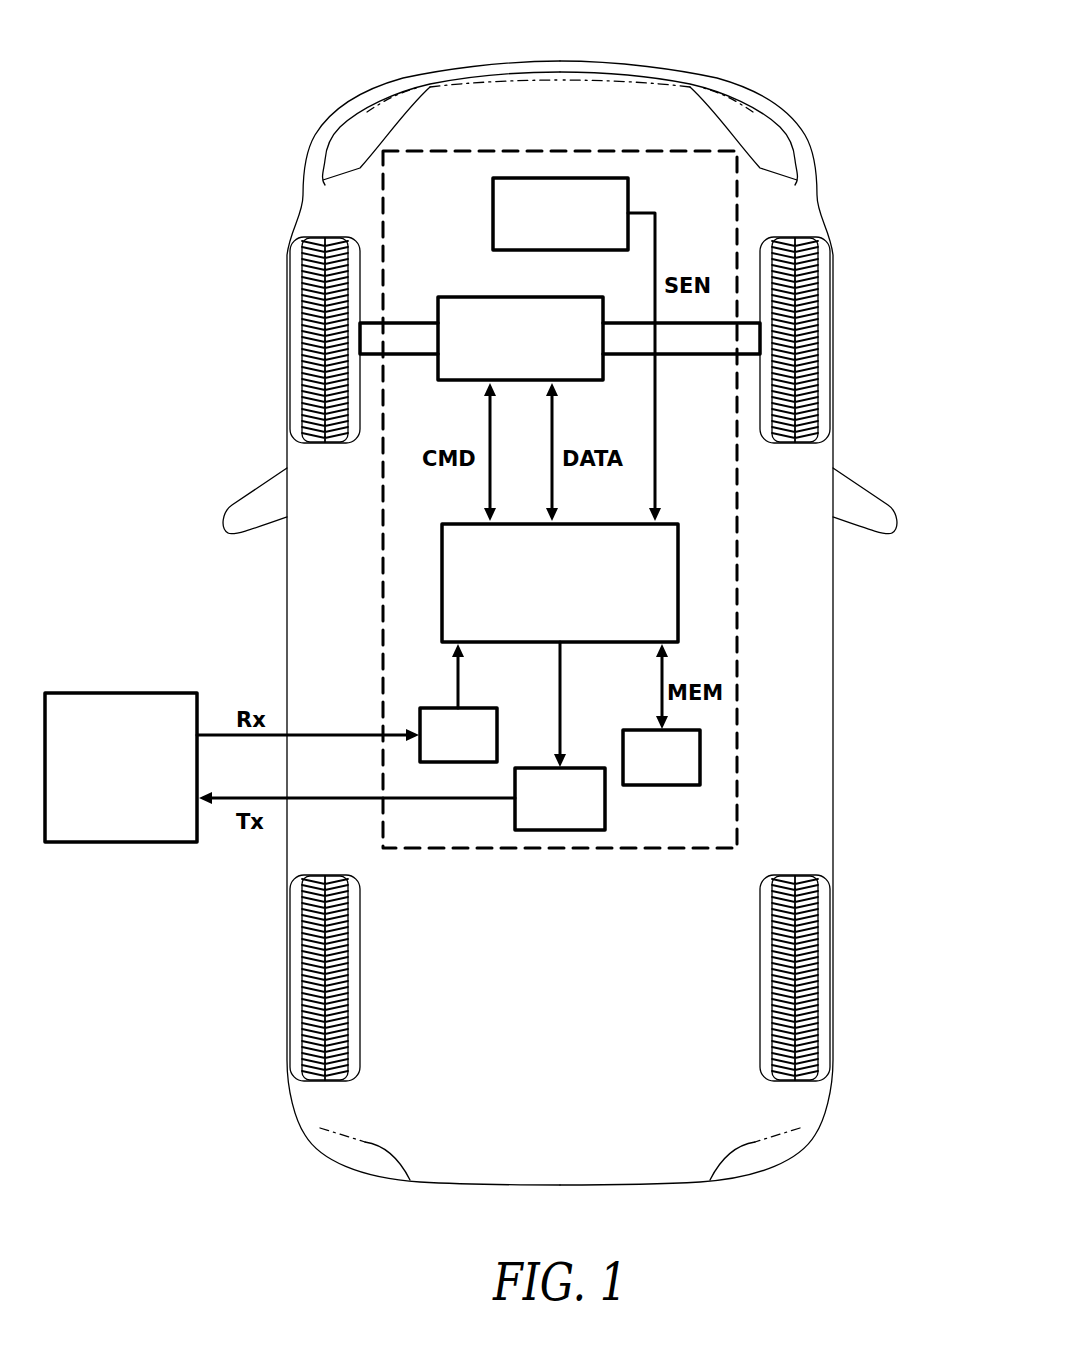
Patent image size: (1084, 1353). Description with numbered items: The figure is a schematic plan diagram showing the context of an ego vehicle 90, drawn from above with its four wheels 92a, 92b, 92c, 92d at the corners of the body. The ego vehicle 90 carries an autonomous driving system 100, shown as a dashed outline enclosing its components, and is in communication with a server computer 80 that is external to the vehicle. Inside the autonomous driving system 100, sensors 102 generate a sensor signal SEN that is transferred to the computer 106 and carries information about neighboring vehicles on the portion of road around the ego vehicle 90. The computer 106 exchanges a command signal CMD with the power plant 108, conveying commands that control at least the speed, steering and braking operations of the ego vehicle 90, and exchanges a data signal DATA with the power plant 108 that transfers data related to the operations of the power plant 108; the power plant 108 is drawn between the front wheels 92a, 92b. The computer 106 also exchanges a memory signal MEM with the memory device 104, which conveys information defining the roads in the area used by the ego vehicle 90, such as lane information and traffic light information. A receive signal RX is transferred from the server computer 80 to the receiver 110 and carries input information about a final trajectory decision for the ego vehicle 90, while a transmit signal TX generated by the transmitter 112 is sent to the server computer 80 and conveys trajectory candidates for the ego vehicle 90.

The ego vehicle 90 is at (373, 92).
The wheel 92a is at (286, 307).
The wheel 92b is at (832, 305).
The wheel 92c is at (290, 1032).
The wheel 92d is at (830, 1032).
The server computer 80 is at (108, 782).
The autonomous driving system 100 is at (383, 665).
The sensors 102 is at (540, 228).
The memory device 104 is at (641, 772).
The computer 106 is at (540, 597).
The power plant 108 is at (500, 352).
The receiver 110 is at (438, 749).
The transmitter 112 is at (540, 814).